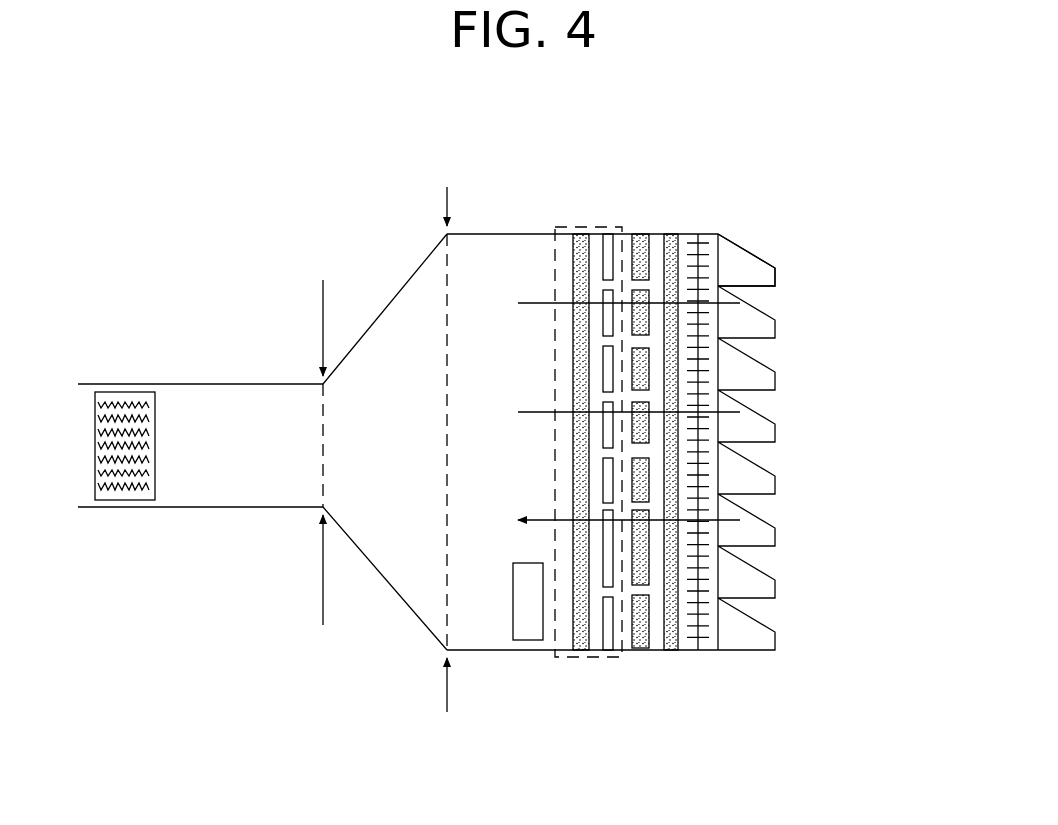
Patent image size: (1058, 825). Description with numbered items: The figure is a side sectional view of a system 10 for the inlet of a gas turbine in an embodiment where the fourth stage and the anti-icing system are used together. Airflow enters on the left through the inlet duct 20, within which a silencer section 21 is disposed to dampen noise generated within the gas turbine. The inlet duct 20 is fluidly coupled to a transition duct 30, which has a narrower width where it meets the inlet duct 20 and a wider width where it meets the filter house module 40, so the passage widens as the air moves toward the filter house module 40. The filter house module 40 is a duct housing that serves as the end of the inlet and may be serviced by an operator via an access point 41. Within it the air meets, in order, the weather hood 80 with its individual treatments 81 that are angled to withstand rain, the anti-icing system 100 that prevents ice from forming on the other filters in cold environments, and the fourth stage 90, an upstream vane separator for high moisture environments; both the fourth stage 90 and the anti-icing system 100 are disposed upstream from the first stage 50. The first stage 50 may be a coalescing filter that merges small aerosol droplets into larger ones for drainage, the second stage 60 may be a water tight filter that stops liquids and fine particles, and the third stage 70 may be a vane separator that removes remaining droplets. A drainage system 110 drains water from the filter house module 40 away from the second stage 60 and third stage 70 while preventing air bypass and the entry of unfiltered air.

The system 10 is at (549, 198).
The inlet duct 20 is at (83, 540).
The silencer section 21 is at (95, 442).
The transition duct 30 is at (320, 712).
The filter house module 40 is at (452, 712).
The access point 41 is at (512, 603).
The first stage 50 is at (640, 650).
The second stage 60 is at (606, 642).
The third stage 70 is at (575, 650).
The weather hood 80 is at (777, 482).
The individual treatments 81 is at (740, 263).
The fourth stage 90 is at (668, 650).
The anti-icing system 100 is at (704, 441).
The drainage system 110 is at (552, 458).